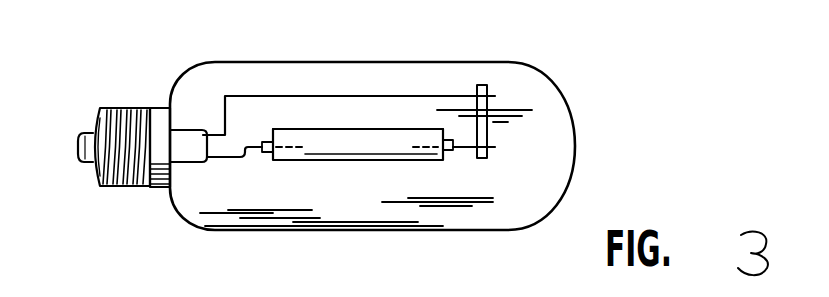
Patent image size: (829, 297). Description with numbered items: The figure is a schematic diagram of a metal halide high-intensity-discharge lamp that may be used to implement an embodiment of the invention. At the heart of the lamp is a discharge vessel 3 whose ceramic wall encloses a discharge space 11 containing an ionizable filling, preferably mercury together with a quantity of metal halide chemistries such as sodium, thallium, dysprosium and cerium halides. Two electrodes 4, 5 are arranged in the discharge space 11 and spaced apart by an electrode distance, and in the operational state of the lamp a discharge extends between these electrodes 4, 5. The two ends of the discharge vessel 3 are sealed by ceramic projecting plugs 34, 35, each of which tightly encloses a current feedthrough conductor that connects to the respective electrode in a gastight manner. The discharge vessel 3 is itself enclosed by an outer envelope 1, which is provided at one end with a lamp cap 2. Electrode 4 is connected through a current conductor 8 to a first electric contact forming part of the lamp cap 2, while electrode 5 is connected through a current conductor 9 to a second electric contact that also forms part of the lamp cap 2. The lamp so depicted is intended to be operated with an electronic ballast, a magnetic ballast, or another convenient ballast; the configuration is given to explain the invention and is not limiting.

The outer envelope 1 is at (573, 177).
The lamp cap 2 is at (128, 187).
The discharge vessel 3 is at (347, 180).
The electrode 4 is at (285, 160).
The electrode 5 is at (429, 160).
The current conductor 8 is at (220, 162).
The current conductor 9 is at (397, 96).
The discharge space 11 is at (338, 140).
The ceramic projecting plug 34 is at (262, 142).
The ceramic projecting plug 35 is at (445, 138).